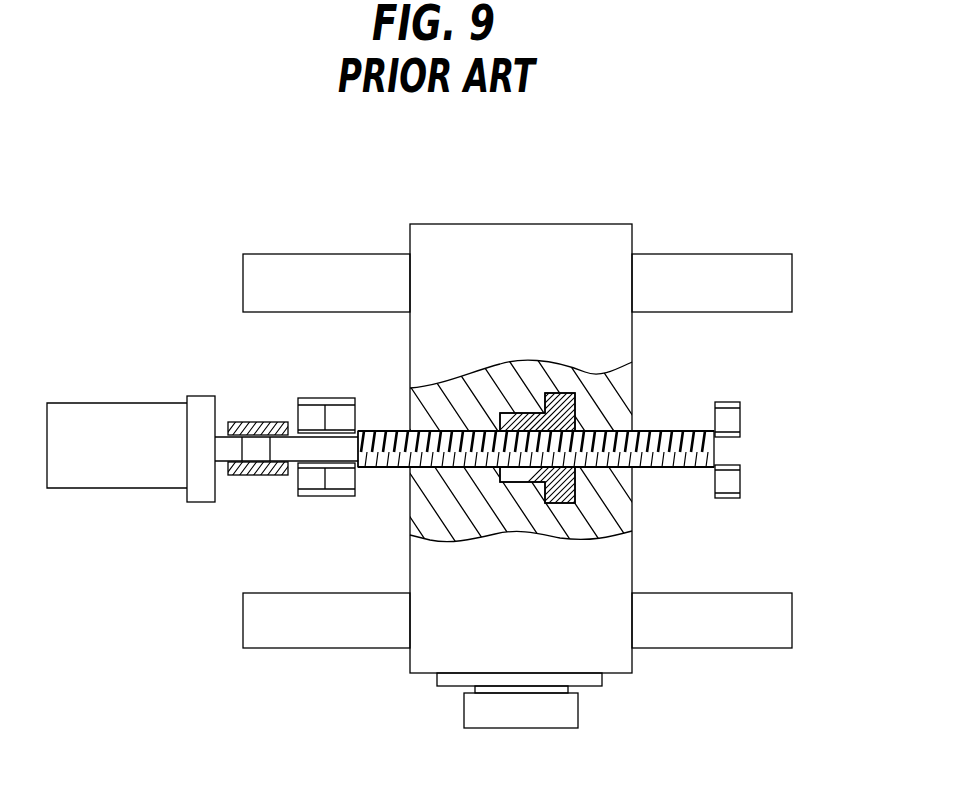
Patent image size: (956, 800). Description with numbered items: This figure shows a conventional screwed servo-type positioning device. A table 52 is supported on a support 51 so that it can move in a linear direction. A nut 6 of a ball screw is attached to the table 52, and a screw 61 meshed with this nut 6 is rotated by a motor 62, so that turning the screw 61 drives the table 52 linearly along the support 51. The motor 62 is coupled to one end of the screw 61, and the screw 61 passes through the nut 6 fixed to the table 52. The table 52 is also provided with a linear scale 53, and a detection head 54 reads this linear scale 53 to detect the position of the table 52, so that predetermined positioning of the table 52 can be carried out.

The support 51 is at (732, 267).
The table 52 is at (416, 352).
The linear scale 53 is at (600, 680).
The detection head 54 is at (563, 713).
The nut 6 is at (575, 490).
The screw 61 is at (677, 432).
The motor 62 is at (92, 413).